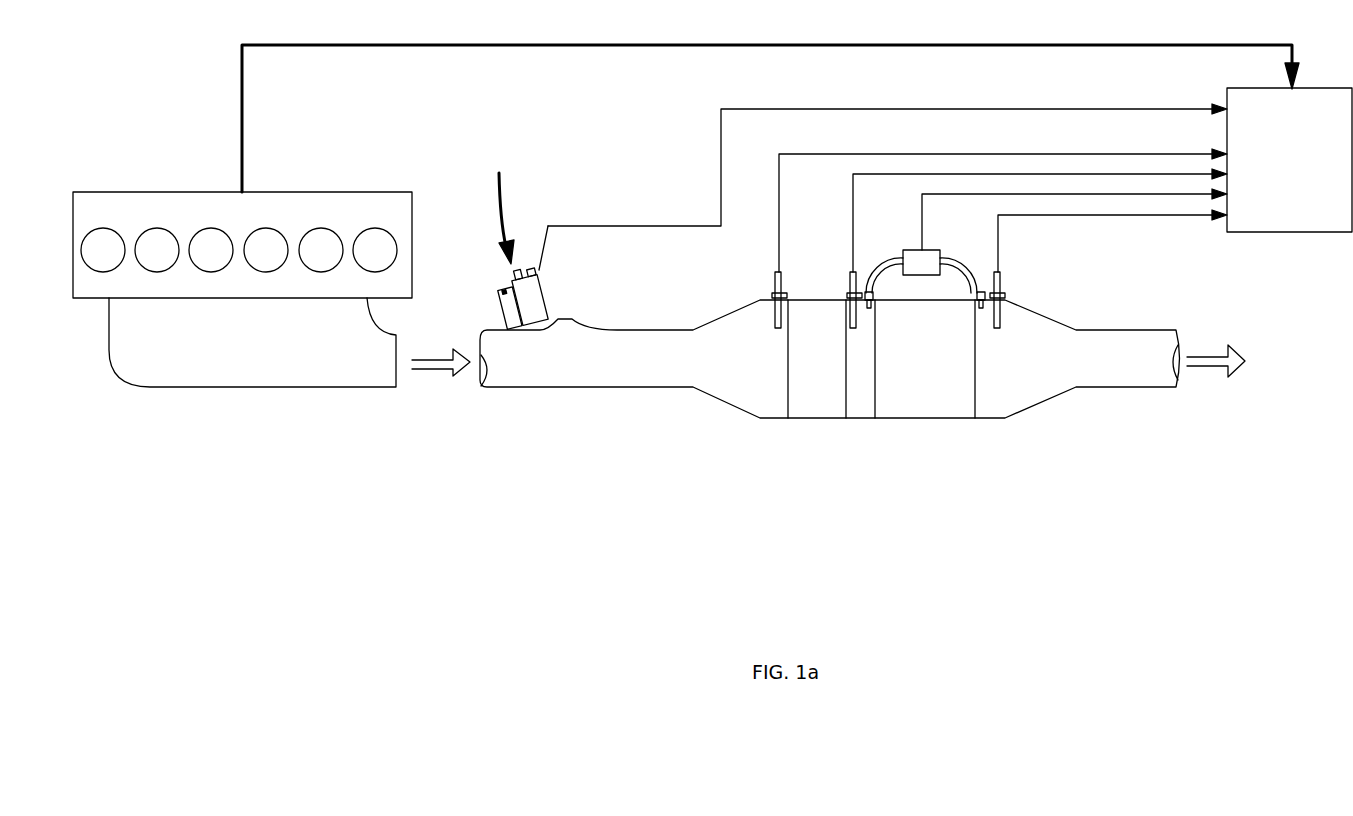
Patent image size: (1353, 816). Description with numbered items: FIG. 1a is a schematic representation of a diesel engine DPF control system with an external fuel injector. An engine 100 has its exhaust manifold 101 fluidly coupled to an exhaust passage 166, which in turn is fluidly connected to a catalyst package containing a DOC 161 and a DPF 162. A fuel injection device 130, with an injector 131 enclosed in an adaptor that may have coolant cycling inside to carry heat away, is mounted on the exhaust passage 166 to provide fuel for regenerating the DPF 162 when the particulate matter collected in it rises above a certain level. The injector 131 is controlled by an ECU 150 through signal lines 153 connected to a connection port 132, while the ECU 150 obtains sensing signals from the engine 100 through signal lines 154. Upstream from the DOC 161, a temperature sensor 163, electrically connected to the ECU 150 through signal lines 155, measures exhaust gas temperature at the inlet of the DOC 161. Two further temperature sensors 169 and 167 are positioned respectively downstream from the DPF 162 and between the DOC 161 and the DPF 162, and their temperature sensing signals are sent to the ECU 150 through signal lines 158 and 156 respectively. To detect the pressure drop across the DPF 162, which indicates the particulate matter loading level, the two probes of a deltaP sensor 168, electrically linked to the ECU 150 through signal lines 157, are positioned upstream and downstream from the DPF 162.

The engine 100 is at (176, 183).
The exhaust manifold 101 is at (245, 388).
The fuel injection device 130 is at (542, 287).
The injector 131 is at (510, 270).
The connection port 132 is at (542, 269).
The ECU 150 is at (1298, 246).
The signal lines 153 is at (1042, 109).
The signal lines 154 is at (1134, 47).
The signal lines 155 is at (1106, 154).
The signal lines 156 is at (1065, 174).
The signal lines 157 is at (1007, 194).
The signal lines 158 is at (1152, 215).
The DOC 161 is at (817, 402).
The DPF 162 is at (932, 403).
The temperature sensor 163 is at (777, 272).
The exhaust passage 166 is at (543, 390).
The temperature sensor 167 is at (855, 272).
The deltaP sensor 168 is at (930, 250).
The temperature sensor 169 is at (1002, 275).